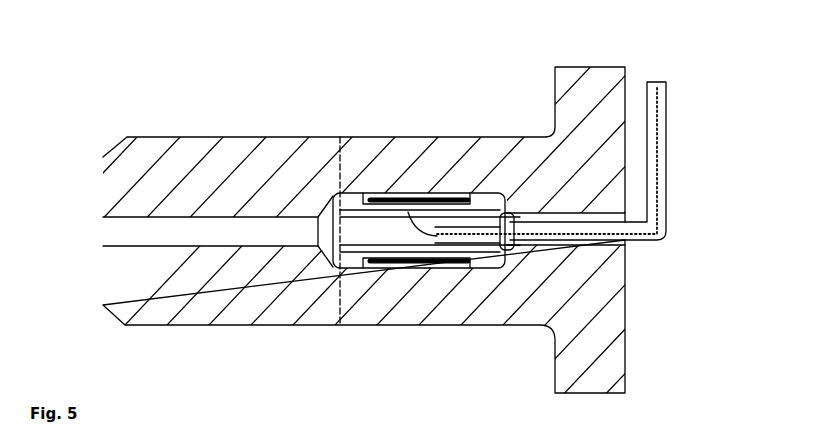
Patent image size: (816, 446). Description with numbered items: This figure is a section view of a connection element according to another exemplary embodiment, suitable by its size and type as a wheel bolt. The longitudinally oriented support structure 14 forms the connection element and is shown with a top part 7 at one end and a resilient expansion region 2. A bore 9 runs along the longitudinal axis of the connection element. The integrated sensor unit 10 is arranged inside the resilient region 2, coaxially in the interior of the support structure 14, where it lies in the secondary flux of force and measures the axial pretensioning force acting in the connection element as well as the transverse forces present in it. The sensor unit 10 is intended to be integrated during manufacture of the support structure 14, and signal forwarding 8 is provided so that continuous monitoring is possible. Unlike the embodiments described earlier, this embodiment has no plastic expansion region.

The resilient region 2 is at (367, 133).
The top part 7 is at (580, 80).
The signal forwarding 8 is at (667, 192).
The bore 9 is at (125, 233).
The sensor unit 10 is at (412, 189).
The support structure 14 is at (540, 318).